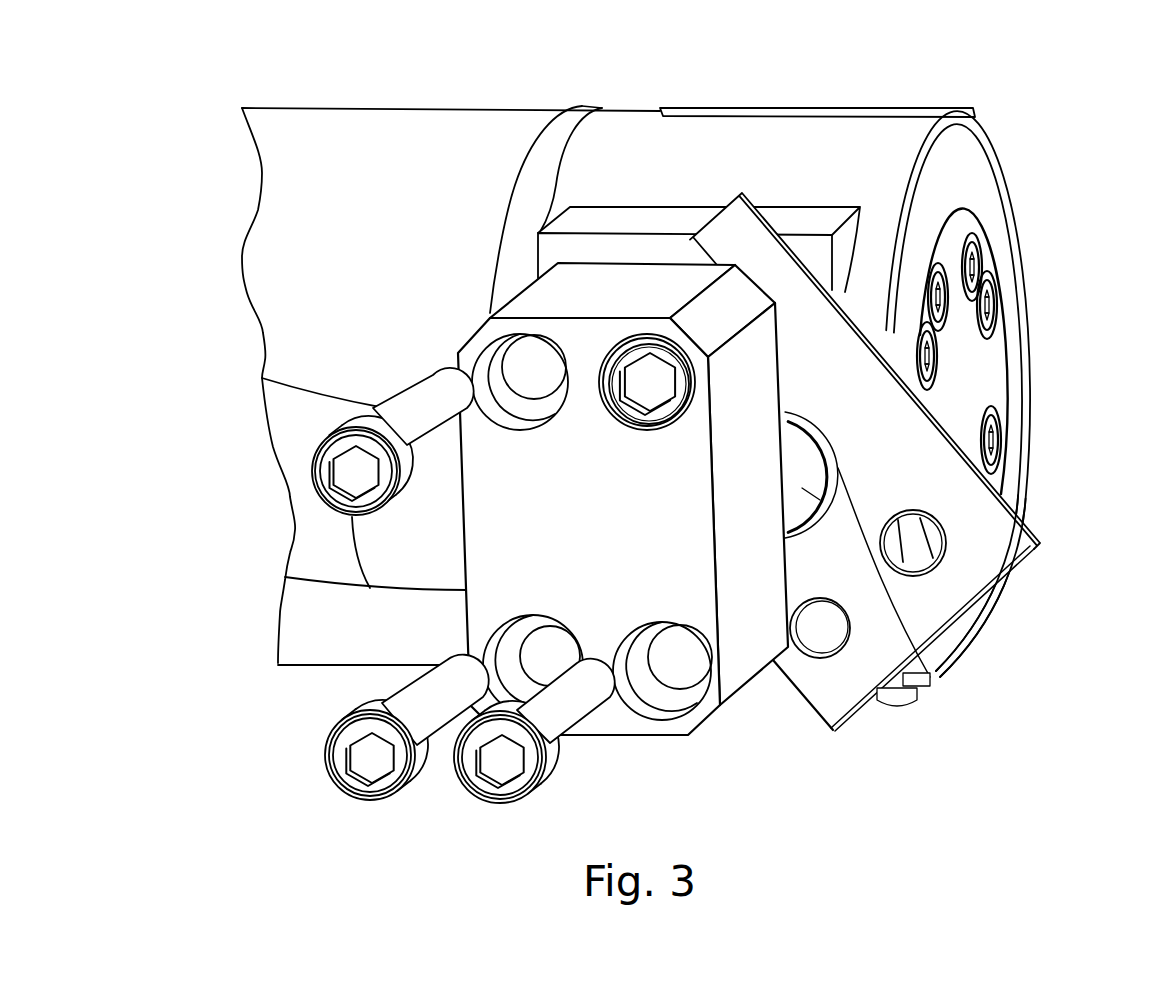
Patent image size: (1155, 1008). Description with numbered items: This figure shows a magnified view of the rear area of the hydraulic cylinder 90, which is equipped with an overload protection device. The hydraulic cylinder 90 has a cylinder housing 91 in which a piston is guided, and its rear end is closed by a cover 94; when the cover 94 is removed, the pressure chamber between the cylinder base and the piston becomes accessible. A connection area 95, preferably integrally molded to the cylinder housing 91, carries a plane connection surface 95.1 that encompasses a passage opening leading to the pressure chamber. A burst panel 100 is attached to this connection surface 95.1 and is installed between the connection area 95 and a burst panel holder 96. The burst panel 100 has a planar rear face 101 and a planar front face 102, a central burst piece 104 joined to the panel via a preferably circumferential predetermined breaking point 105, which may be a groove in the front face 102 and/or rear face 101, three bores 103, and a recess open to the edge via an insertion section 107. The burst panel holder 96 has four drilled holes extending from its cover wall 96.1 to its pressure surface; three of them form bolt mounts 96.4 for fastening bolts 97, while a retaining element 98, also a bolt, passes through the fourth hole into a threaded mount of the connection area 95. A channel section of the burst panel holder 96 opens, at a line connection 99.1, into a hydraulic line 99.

The hydraulic cylinder 90 is at (270, 96).
The cylinder housing 91 is at (343, 132).
The cover 94 is at (978, 372).
The connection area 95 is at (808, 220).
The plane connection surface 95.1 is at (815, 253).
The burst panel holder 96 is at (458, 561).
The cover wall 96.1 is at (717, 610).
The bolt mounts 96.4 is at (672, 690).
The fastening bolts 97 is at (330, 460).
The retaining element 98 is at (657, 382).
The hydraulic line 99 is at (312, 560).
The line connection 99.1 is at (432, 527).
The burst panel 100 is at (1038, 530).
The planar rear face 101 is at (930, 608).
The planar front face 102 is at (930, 410).
The bores 103 is at (947, 537).
The burst piece 104 is at (825, 477).
The predetermined breaking point 105 is at (940, 677).
The insertion section 107 is at (696, 243).